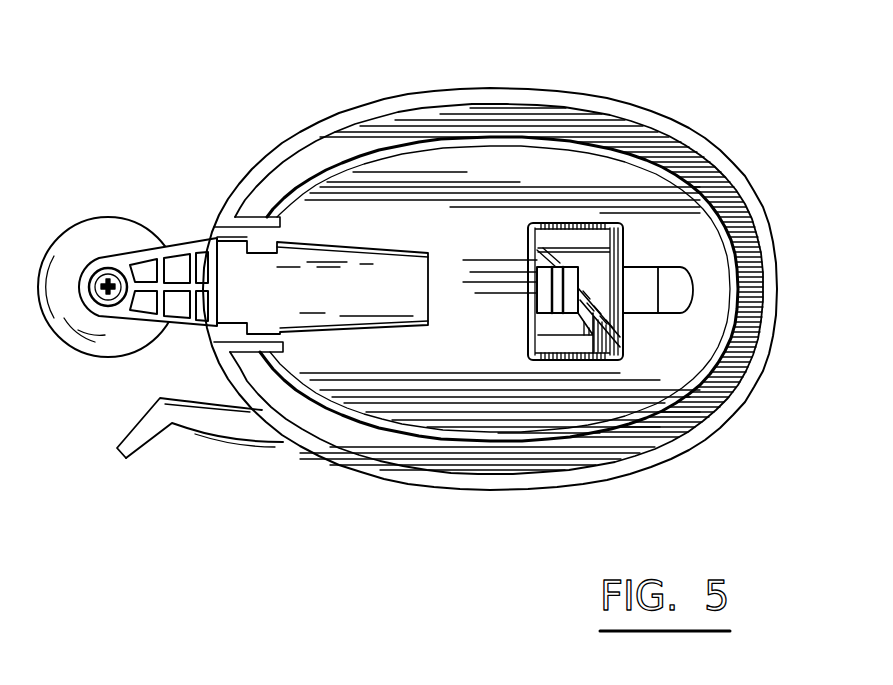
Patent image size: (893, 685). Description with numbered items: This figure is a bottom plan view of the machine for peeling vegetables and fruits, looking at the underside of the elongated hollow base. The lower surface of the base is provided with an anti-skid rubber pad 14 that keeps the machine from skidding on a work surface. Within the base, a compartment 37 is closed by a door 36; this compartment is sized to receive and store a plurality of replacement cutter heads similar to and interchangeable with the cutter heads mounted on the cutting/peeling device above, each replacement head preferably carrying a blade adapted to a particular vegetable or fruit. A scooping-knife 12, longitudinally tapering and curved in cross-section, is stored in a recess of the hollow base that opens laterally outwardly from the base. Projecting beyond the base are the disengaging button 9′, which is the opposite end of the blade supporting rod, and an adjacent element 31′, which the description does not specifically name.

The scooping-knife 12 is at (248, 293).
The anti-skid rubber pad 14 is at (728, 370).
The door 36 is at (528, 235).
The compartment 37 is at (620, 357).
The disengaging button 9′ is at (125, 455).
The curved strip 31′ is at (230, 425).